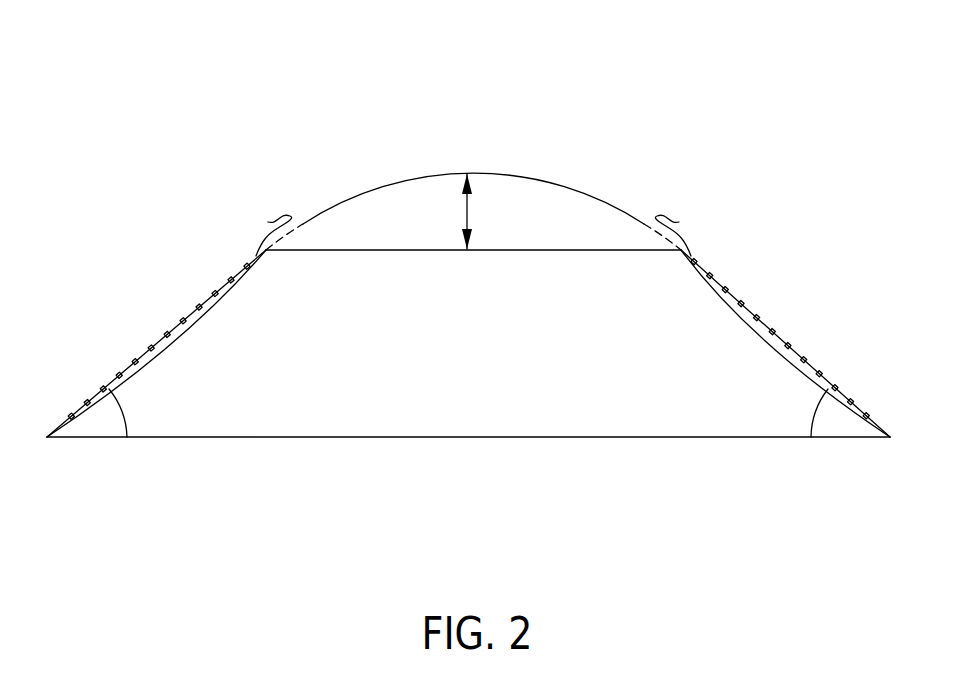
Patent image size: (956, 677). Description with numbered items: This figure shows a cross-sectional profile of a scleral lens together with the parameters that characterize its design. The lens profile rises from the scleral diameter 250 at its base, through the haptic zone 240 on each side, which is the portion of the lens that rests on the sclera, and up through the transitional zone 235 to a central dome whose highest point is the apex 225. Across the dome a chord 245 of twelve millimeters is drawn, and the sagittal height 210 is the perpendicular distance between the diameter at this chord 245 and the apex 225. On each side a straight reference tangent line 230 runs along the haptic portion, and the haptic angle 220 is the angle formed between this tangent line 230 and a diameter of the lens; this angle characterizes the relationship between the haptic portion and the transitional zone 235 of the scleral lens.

The sagittal height 210 is at (488, 207).
The haptic angle 220 is at (143, 405).
The apex 225 is at (466, 150).
The straight (reference) tangent line 230 is at (191, 281).
The transitional zone 235 is at (716, 190).
The haptic zone 240 is at (885, 290).
The 12 mm chord 245 is at (407, 273).
The scleral diameter 250 is at (460, 462).